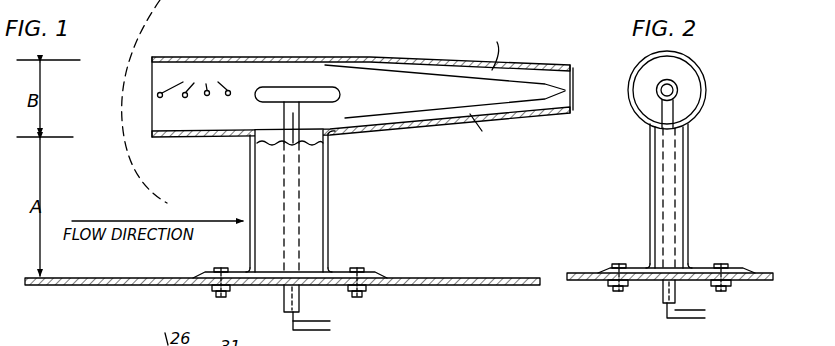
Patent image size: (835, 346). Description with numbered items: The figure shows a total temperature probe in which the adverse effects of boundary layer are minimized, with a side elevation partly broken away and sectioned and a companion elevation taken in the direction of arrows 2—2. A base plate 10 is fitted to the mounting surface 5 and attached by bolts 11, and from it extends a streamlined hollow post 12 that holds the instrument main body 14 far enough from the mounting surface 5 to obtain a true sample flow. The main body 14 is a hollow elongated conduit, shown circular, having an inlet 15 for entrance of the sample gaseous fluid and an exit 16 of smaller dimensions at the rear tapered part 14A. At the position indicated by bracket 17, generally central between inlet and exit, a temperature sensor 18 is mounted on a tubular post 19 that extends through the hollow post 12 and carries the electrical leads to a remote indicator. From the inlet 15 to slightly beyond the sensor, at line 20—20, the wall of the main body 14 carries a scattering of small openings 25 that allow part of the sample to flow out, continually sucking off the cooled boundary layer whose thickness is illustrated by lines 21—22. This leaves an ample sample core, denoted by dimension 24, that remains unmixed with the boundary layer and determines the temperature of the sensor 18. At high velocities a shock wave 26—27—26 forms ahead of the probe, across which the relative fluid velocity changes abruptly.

In FIG. 1, the section arrows 2— 2 is at (160, 175).
In FIG. 1, the base plate / mounting surface 5 is at (416, 278).
In FIG. 2, the base plate / mounting surface 5 is at (581, 273).
In FIG. 1, the base plate 10 is at (341, 271).
In FIG. 2, the base plate 10 is at (699, 268).
In FIG. 1, the bolts 11 is at (222, 274).
In FIG. 2, the bolts 11 is at (617, 290).
In FIG. 1, the hollow post 12 is at (257, 201).
In FIG. 2, the hollow post 12 is at (689, 183).
In FIG. 1, the instrument main body 14 is at (217, 33).
In FIG. 2, the instrument main body 14 is at (701, 64).
In FIG. 1, the rear tapered part 14A is at (533, 112).
In FIG. 1, the inlet 15 is at (148, 63).
In FIG. 1, the exit 16 is at (575, 72).
In FIG. 1, the sensor position bracket 17 is at (338, 56).
In FIG. 1, the temperature sensor 18 is at (290, 92).
In FIG. 2, the temperature sensor 18 is at (670, 89).
In FIG. 1, the tubular post 19 is at (300, 111).
In FIG. 2, the tubular post 19 is at (670, 109).
In FIG. 1, the line 20— 20 is at (373, 57).
In FIG. 1, the boundary layer thickness line 21 is at (163, 124).
In FIG. 1, the boundary layer thickness line 22 is at (560, 88).
In FIG. 1, the sample core 24 is at (248, 64).
In FIG. 1, the small openings 25 is at (240, 63).
In FIG. 1, the shock wave front 26 is at (134, 101).
In FIG. 1, the shock wave front 27 is at (120, 87).